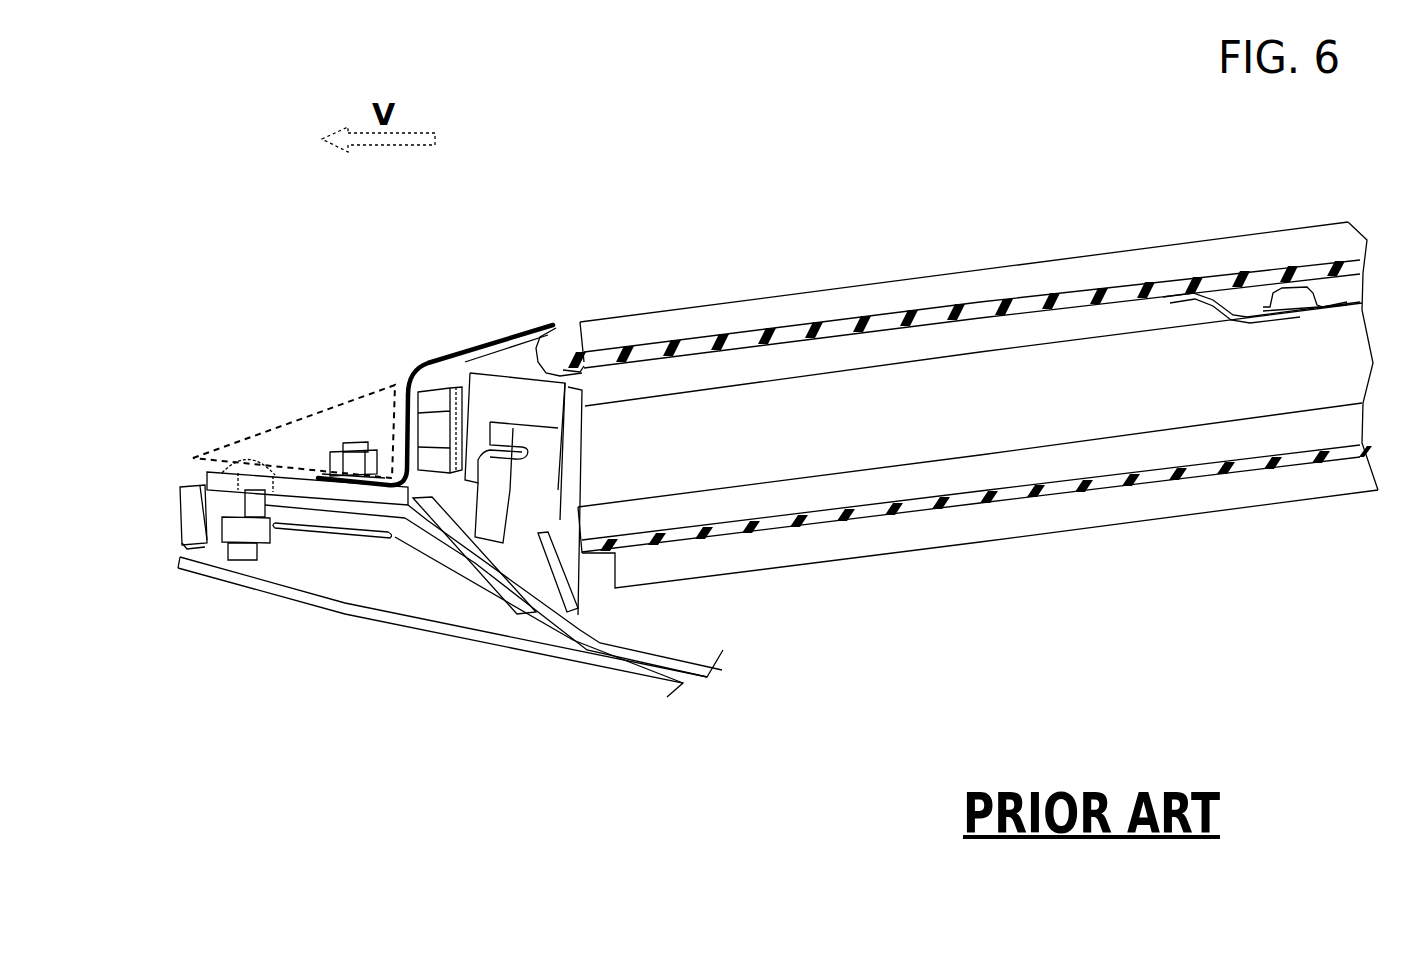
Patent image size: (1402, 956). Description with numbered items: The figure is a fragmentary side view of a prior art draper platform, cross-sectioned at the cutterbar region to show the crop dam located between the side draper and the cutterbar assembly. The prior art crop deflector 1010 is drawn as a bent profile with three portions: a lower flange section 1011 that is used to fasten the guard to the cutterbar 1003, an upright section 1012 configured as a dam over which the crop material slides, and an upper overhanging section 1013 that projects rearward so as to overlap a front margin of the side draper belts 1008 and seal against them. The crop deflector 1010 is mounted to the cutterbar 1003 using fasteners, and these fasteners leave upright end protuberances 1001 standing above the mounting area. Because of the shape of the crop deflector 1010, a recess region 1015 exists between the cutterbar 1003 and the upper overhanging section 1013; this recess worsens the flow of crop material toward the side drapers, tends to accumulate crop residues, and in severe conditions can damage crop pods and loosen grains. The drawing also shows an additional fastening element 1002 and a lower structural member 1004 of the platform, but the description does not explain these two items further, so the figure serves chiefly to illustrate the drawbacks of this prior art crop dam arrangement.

The upright end protuberances 1001 is at (352, 442).
The bolt 1002 is at (338, 460).
The cutterbar 1003 is at (195, 480).
The floor panel 1004 is at (344, 602).
The side draper belts 1008 is at (882, 308).
The crop deflector 1010 is at (414, 378).
The lower flange section 1011 is at (352, 487).
The upright section 1012 is at (402, 431).
The upper overhanging section 1013 is at (487, 350).
The recess region 1015 is at (229, 452).